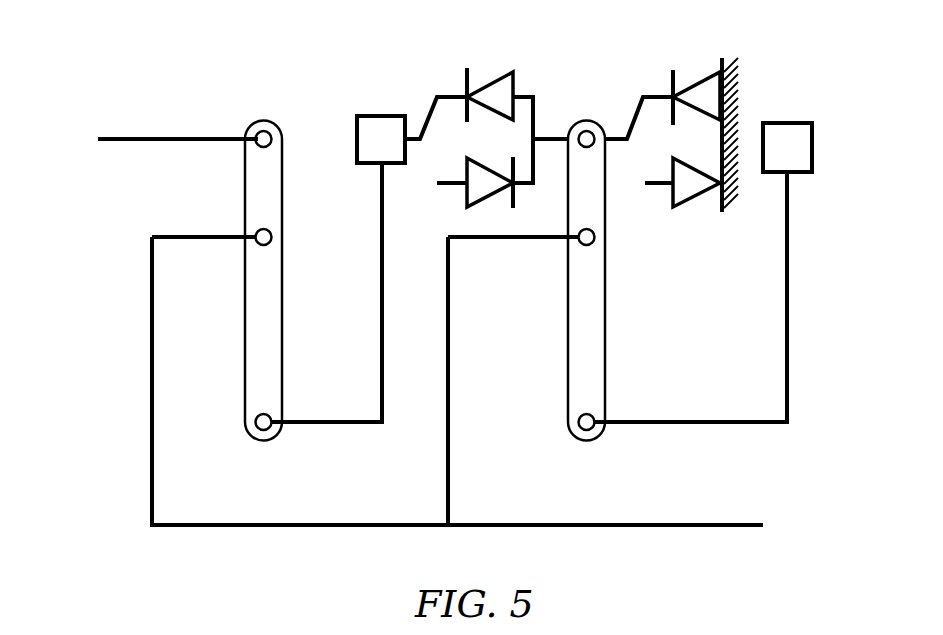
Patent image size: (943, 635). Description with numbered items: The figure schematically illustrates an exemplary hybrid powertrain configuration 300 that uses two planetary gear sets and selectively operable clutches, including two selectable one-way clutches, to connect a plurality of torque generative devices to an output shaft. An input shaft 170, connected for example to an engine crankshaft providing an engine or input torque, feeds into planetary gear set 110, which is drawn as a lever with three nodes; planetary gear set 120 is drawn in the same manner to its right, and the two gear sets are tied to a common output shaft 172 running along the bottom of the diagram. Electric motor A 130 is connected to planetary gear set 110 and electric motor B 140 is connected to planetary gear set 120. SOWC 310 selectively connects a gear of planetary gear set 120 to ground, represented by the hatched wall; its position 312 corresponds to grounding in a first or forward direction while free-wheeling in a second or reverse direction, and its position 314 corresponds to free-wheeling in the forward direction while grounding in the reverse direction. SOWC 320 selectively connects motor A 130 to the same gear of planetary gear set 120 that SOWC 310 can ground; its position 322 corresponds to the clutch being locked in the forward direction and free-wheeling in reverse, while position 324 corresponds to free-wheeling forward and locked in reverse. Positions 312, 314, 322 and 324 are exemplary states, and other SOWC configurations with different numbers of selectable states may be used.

The configuration 300 is at (145, 70).
The input shaft 170 is at (140, 135).
The output shaft 172 is at (748, 532).
The planetary gear set 110 is at (273, 443).
The planetary gear set 120 is at (598, 443).
The electric motor A 130 is at (378, 114).
The electric motor B 140 is at (793, 121).
The SOWC 320 is at (495, 124).
The position 322 is at (491, 81).
The position 324 is at (466, 198).
The SOWC 310 is at (705, 129).
The position 312 is at (698, 79).
The position 314 is at (690, 198).